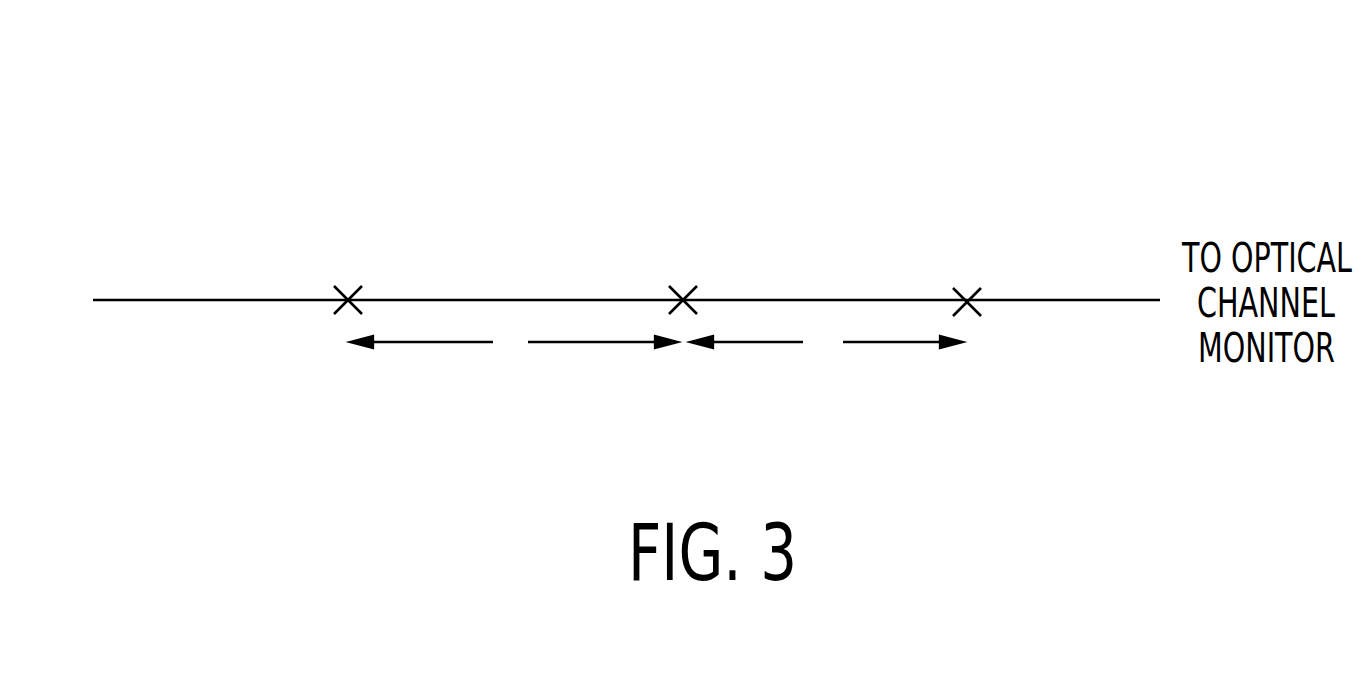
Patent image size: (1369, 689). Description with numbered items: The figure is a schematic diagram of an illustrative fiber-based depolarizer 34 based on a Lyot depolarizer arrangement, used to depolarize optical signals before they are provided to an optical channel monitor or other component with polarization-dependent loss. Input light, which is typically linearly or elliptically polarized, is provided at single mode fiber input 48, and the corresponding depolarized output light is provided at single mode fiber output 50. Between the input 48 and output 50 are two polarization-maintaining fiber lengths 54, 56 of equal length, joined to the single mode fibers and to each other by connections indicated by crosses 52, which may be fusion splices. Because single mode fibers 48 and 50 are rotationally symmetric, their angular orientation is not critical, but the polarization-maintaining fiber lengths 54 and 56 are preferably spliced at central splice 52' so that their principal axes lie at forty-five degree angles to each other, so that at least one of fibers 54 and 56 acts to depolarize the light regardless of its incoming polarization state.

The depolarizer 34 is at (853, 97).
The single mode fiber input 48 is at (117, 302).
The single mode fiber output 50 is at (1057, 303).
The crosses 52 is at (644, 230).
The central splice 52' is at (698, 361).
The polarization-maintaining fiber length 54 is at (607, 299).
The polarization-maintaining fiber length 56 is at (897, 300).